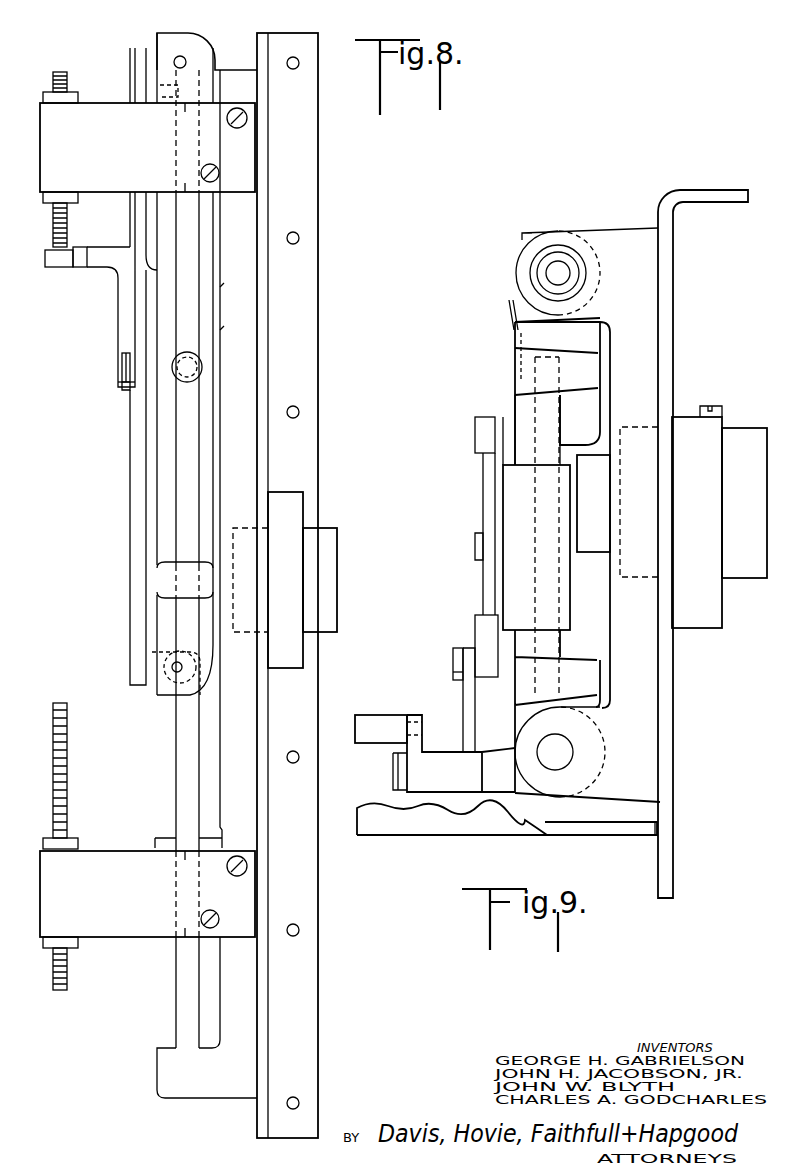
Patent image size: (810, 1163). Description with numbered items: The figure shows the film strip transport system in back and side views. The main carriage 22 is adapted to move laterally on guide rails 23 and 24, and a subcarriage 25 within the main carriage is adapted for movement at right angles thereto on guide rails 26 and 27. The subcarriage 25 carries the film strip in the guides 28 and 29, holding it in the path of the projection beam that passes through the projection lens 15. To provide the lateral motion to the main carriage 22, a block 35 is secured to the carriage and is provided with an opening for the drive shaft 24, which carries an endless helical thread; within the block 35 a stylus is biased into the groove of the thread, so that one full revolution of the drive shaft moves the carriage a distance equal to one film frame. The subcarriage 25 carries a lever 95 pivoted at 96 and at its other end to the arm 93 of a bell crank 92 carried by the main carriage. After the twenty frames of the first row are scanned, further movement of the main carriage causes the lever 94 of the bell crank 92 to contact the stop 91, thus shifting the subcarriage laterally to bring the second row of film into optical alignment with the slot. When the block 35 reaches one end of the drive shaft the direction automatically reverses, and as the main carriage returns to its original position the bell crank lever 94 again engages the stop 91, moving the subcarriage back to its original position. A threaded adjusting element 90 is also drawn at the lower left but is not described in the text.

In FIG. 8, the projection lens 15 is at (300, 552).
In FIG. 9, the projection lens 15 is at (745, 432).
In FIG. 8, the main carriage 22 is at (322, 418).
In FIG. 8, the guide rail 23 is at (188, 755).
In FIG. 9, the guide rail 23 is at (556, 760).
In FIG. 9, the guide rail 24 is at (560, 272).
In FIG. 8, the subcarriage 25 is at (146, 468).
In FIG. 9, the subcarriage 25 is at (485, 472).
In FIG. 8, the guide rail 26 is at (178, 668).
In FIG. 8, the guide rail 27 is at (181, 62).
In FIG. 9, the guide 28 is at (480, 432).
In FIG. 9, the guide 29 is at (476, 626).
In FIG. 9, the block 35 is at (530, 322).
In FIG. 8, the bolt 90 is at (53, 748).
In FIG. 8, the stop 91 is at (68, 230).
In FIG. 9, the bell crank 92 is at (440, 763).
In FIG. 8, the arm 93 is at (118, 312).
In FIG. 8, the lever 94 is at (62, 266).
In FIG. 9, the lever 94 is at (370, 726).
In FIG. 8, the lever 95 is at (122, 378).
In FIG. 9, the lever 95 is at (475, 693).
In FIG. 9, the pivot 96 is at (453, 662).